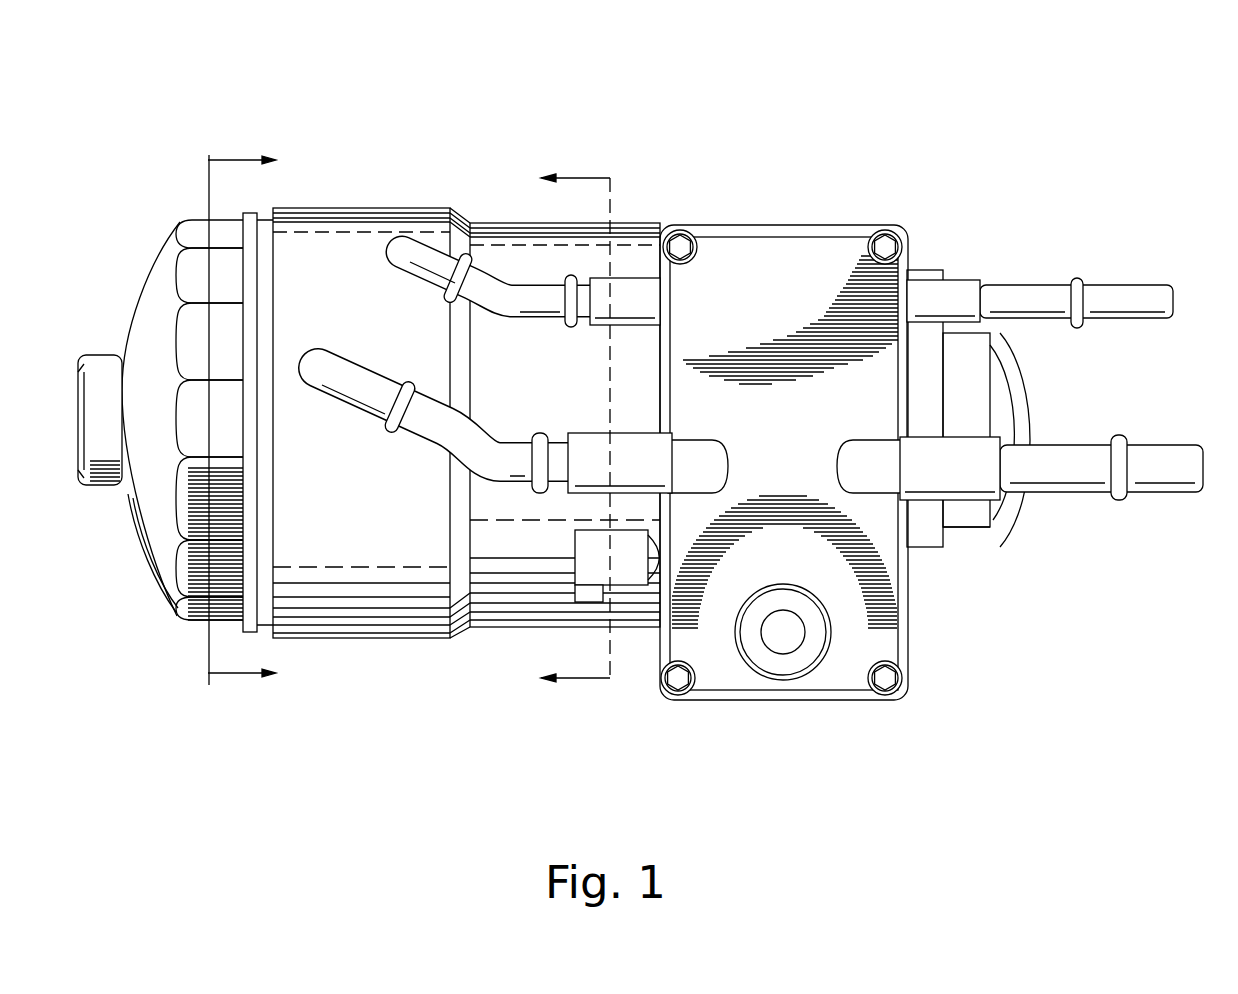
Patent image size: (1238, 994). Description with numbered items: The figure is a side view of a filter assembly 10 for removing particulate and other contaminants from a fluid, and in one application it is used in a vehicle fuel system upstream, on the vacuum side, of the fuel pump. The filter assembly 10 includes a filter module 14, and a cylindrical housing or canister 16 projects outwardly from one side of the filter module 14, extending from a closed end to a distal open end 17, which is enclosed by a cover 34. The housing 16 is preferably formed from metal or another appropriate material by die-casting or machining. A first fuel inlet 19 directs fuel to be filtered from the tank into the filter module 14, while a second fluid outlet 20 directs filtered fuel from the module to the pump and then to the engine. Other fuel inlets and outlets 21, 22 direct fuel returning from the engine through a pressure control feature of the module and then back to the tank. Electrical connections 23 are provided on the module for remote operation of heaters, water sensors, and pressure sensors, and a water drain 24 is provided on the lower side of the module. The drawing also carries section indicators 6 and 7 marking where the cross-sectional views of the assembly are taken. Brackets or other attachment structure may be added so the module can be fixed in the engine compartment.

The filter assembly 10 is at (650, 429).
The filter module 14 is at (848, 700).
The housing 16 is at (365, 638).
The open end 17 is at (260, 208).
The first fuel inlet 19 is at (1137, 280).
The second fluid outlet 20 is at (512, 283).
The fuel inlet/outlet 21 is at (1163, 493).
The fuel inlet/outlet 22 is at (428, 465).
The electrical connections 23 is at (590, 565).
The water drain 24 is at (783, 640).
The cover 34 is at (125, 568).
The section line 6- 6 is at (242, 417).
The section line 7- 7 is at (575, 430).